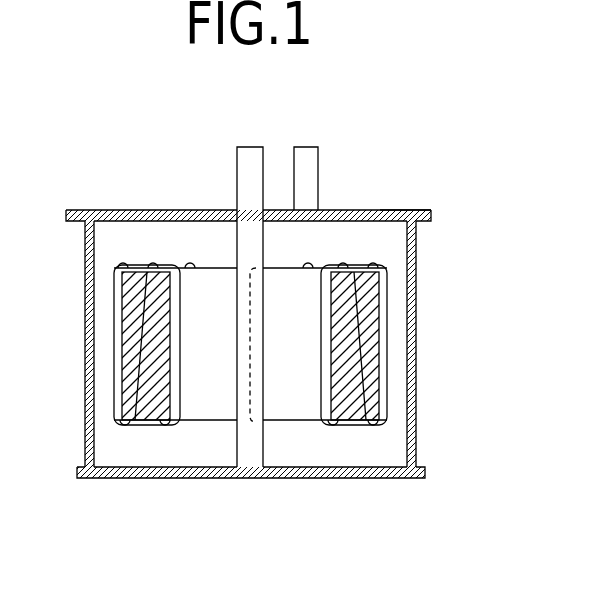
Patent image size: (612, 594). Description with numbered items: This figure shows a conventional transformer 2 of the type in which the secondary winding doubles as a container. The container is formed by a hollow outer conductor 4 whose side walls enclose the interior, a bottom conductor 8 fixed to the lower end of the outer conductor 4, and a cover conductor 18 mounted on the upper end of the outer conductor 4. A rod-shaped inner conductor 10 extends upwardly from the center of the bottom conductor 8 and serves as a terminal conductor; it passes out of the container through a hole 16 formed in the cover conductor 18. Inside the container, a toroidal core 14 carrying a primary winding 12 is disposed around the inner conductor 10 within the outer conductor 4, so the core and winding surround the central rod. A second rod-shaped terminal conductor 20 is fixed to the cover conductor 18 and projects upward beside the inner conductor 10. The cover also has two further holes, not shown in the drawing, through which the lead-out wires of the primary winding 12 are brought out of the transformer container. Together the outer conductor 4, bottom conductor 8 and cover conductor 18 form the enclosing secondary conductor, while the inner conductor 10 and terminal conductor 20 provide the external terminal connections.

The transformer 2 is at (280, 126).
The outer conductor 4 is at (85, 347).
The bottom conductor 8 is at (272, 478).
The inner conductor 10 is at (238, 248).
The primary winding 12 is at (178, 322).
The toroidal core 14 is at (148, 424).
The hole 16 is at (220, 210).
The cover conductor 18 is at (393, 210).
The terminal conductor 20 is at (311, 173).